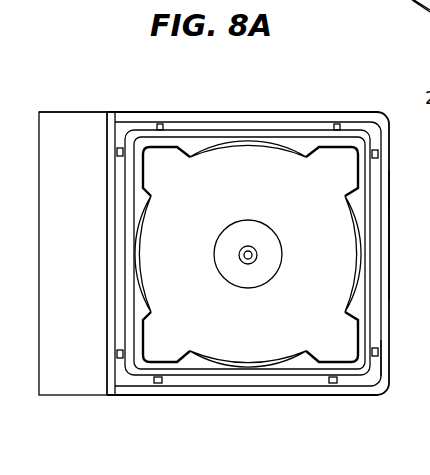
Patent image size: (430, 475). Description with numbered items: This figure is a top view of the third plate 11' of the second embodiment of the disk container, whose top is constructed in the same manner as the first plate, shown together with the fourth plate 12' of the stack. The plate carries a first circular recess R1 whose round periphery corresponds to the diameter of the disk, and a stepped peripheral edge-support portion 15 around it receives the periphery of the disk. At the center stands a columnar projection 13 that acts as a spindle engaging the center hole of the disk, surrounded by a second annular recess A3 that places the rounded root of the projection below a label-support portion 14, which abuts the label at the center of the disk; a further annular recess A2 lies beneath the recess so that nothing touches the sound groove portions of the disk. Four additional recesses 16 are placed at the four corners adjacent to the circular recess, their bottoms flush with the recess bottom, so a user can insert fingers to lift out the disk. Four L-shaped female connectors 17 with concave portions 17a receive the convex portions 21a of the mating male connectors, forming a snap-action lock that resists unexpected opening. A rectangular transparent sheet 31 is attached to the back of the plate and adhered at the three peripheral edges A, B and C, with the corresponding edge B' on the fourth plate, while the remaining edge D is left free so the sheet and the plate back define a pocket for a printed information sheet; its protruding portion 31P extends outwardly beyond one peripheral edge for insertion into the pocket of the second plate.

The transparent sheet 31 is at (70, 398).
The protruding portion 31P is at (61, 123).
The remaining edge D is at (107, 238).
The peripheral edge A is at (235, 112).
The peripheral edge B is at (400, 250).
The peripheral edge B' is at (420, 293).
The peripheral edge C is at (240, 397).
The third plate 11' is at (405, 190).
The fourth plate 12' is at (416, 226).
The convex portion 21a is at (392, 359).
The female connector 17 is at (136, 134).
The concave portion 17a is at (120, 152).
The additional recess 16 is at (174, 156).
The peripheral edge-support portion 15 is at (252, 143).
The label-support portion 14 is at (231, 270).
The columnar projection 13 is at (251, 253).
The first circular recess R1 is at (235, 223).
The second annular recess A3 is at (273, 277).
The annular recess A2 is at (310, 322).